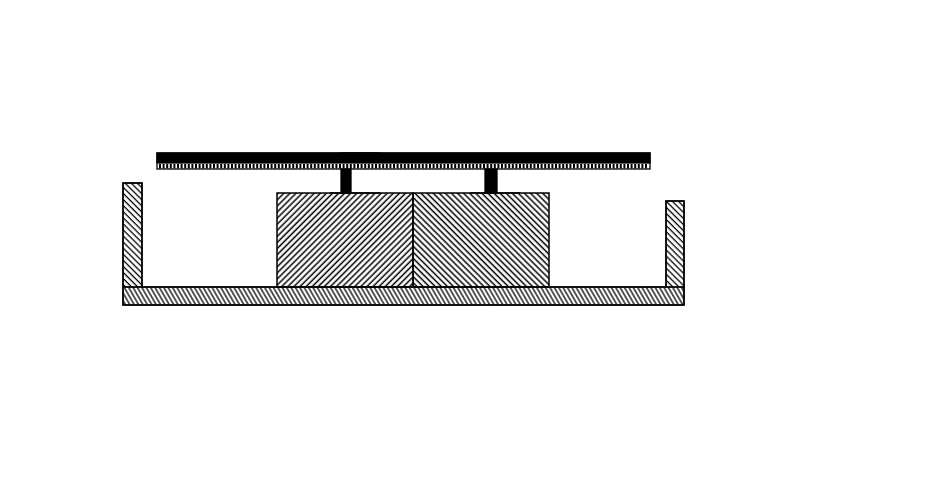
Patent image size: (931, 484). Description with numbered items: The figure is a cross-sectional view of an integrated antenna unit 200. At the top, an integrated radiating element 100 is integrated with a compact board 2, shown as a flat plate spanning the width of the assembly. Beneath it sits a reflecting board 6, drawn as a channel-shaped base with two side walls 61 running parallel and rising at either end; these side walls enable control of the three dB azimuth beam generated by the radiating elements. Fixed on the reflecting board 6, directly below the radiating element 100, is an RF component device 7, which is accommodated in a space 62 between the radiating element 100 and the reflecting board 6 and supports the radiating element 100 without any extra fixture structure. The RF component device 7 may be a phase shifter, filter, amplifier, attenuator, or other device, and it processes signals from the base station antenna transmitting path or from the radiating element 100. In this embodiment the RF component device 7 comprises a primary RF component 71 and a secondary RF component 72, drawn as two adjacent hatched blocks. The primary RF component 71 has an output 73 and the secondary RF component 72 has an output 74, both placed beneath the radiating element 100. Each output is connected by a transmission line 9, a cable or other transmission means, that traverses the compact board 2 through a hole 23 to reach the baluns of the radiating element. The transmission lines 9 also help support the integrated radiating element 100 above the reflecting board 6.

The integrated antenna unit 200 is at (435, 238).
The integrated radiating element 100 is at (460, 133).
The compact board 2 is at (157, 158).
The hole 23 is at (361, 153).
The transmission line 9 is at (338, 153).
The reflecting board 6 is at (620, 298).
The side walls 61 is at (133, 268).
The space 62 is at (604, 229).
The RF component device 7 is at (476, 258).
The primary RF component 71 is at (335, 258).
The secondary RF component 72 is at (488, 265).
The output 73 is at (349, 192).
The output 74 is at (497, 193).